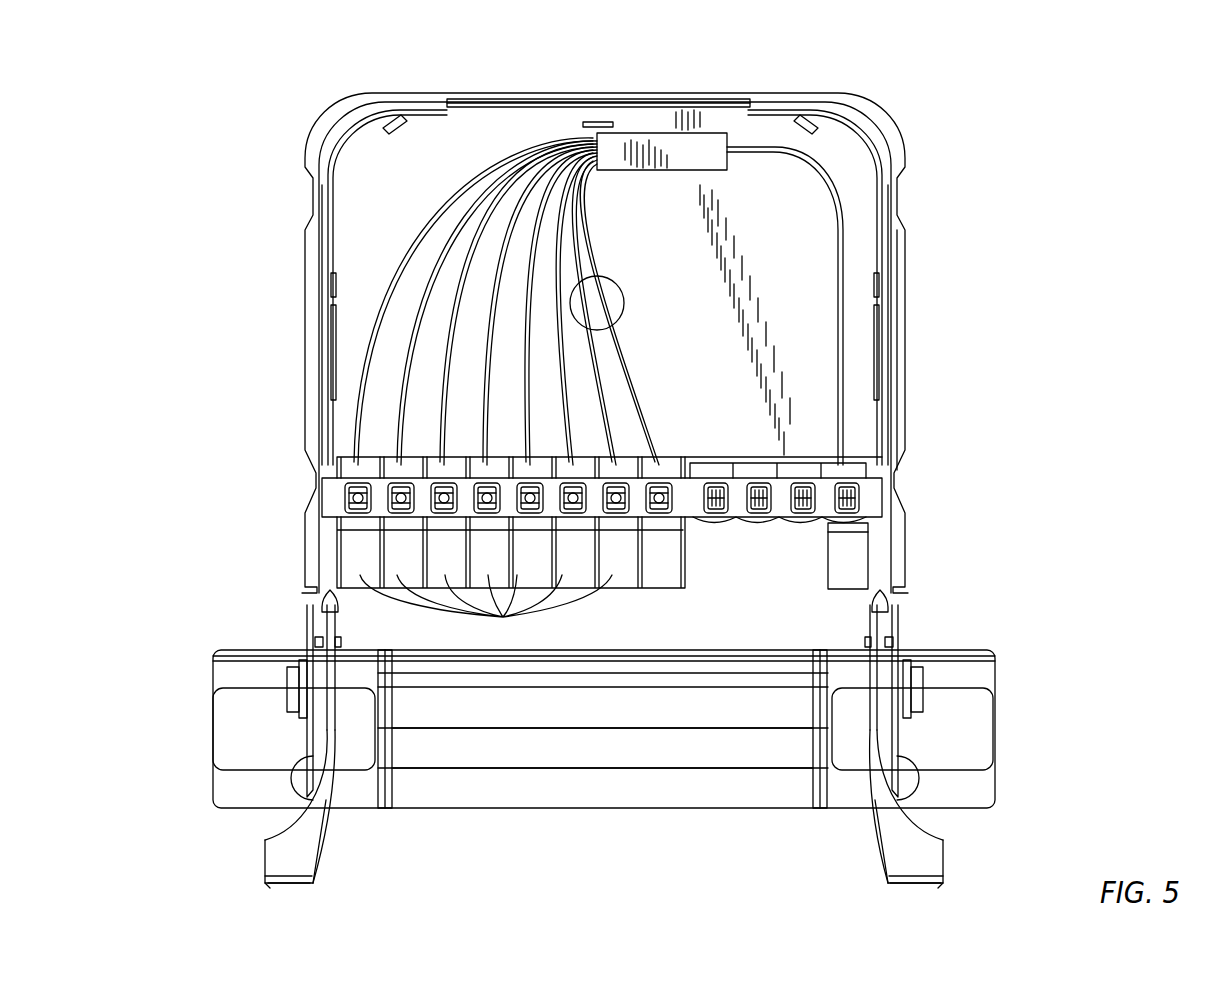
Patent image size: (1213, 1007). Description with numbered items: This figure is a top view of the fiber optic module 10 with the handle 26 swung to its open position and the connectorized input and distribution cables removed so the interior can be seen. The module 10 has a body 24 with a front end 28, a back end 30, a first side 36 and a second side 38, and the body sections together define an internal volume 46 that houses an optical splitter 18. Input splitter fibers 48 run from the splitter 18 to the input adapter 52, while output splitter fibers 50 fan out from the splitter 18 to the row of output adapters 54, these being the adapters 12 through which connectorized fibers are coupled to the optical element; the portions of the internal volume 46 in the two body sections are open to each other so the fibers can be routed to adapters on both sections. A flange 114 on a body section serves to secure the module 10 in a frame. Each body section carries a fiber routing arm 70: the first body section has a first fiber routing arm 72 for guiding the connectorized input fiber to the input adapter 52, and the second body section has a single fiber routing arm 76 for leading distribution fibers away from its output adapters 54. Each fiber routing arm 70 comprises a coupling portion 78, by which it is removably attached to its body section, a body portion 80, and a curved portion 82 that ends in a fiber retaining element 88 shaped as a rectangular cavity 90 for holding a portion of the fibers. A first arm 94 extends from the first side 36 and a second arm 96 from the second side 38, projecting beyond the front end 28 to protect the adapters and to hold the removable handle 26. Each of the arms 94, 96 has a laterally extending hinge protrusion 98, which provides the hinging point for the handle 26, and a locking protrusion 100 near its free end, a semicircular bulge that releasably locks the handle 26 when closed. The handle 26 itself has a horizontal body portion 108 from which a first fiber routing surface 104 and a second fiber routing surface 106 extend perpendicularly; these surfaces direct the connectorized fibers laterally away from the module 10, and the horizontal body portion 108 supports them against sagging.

The fiber optic module 10 is at (940, 128).
The adapters 12 is at (355, 552).
The optical splitter 18 is at (660, 140).
The body 24 is at (910, 318).
The handle 26 is at (968, 635).
The front end 28 is at (758, 592).
The back end 30 is at (826, 82).
The first side 36 is at (322, 346).
The second side 38 is at (890, 268).
The internal volume 46 is at (355, 207).
The input splitter fibers 48 is at (835, 332).
The output splitter fibers 50 is at (475, 203).
The input adapter 52 is at (846, 592).
The output adapters 54 is at (486, 614).
The fiber routing arm 70 is at (332, 860).
The first fiber routing arm 72 is at (930, 842).
The fiber routing arm 76 is at (268, 852).
The coupling portion 78 is at (330, 622).
The body portion 80 is at (336, 748).
The curved portion 82 is at (328, 830).
The fiber retaining element 88 is at (290, 884).
The rectangular cavity 90 is at (262, 868).
The first arm 94 is at (307, 745).
The second arm 96 is at (900, 738).
The hinge protrusion 98 is at (290, 690).
The locking protrusion 100 is at (290, 782).
The first fiber routing surface 104 is at (627, 712).
The second fiber routing surface 106 is at (558, 808).
The horizontal body portion 108 is at (977, 655).
The flange 114 is at (905, 392).